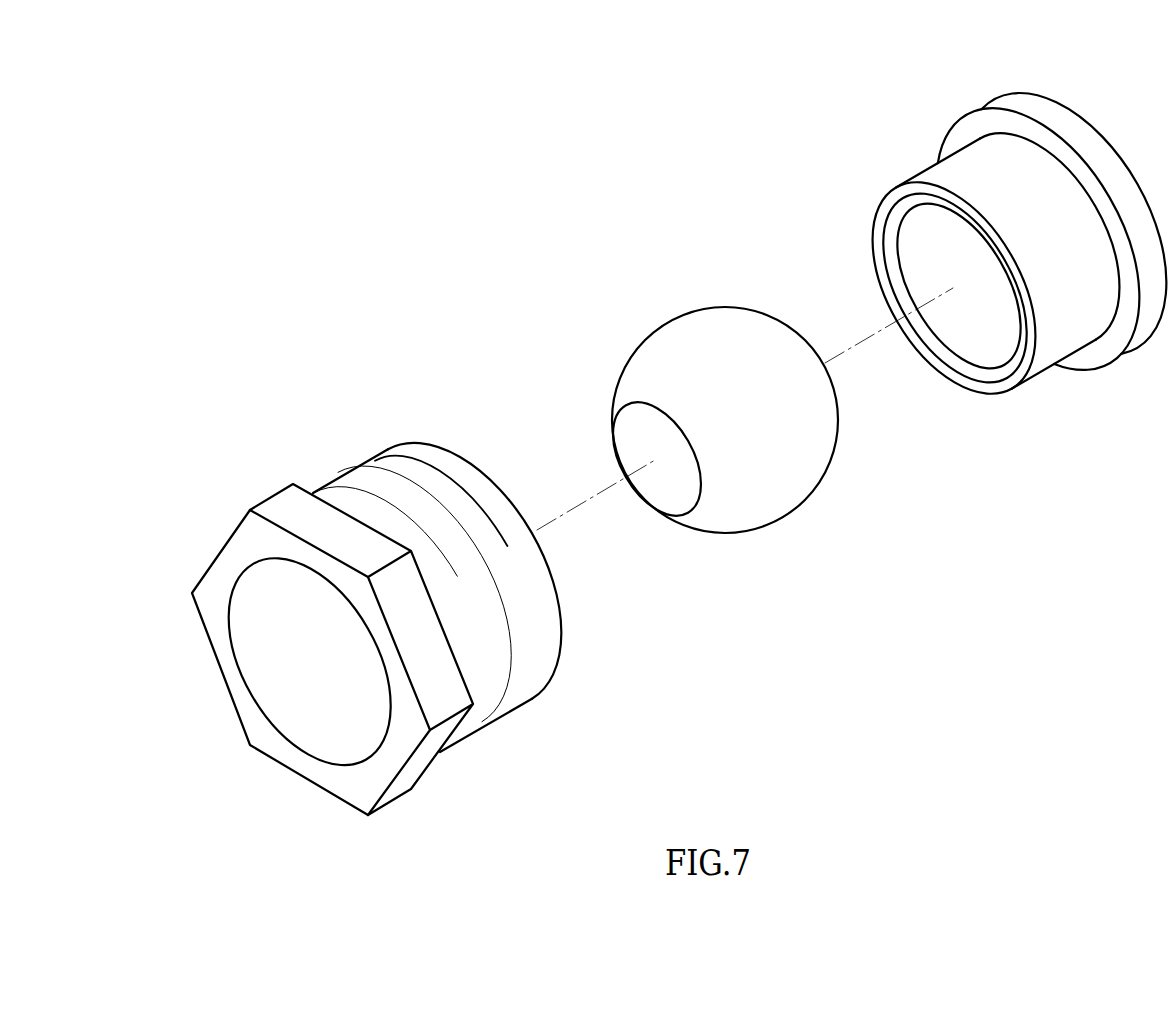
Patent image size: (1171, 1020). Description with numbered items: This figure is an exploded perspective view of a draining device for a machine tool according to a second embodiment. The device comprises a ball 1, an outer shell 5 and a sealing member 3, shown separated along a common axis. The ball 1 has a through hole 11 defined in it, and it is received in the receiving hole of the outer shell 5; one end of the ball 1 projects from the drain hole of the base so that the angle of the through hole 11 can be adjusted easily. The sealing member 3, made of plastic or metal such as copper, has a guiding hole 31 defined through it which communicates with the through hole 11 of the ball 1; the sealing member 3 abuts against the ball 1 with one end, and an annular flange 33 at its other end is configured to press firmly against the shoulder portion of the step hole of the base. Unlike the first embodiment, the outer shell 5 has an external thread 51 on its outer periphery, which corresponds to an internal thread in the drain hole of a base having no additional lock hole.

The ball 1 is at (661, 399).
The through hole 11 is at (628, 432).
The sealing member 3 is at (973, 231).
The guiding hole 31 is at (920, 242).
The annular flange 33 is at (1027, 103).
The outer shell 5 is at (365, 593).
The external thread 51 is at (395, 470).